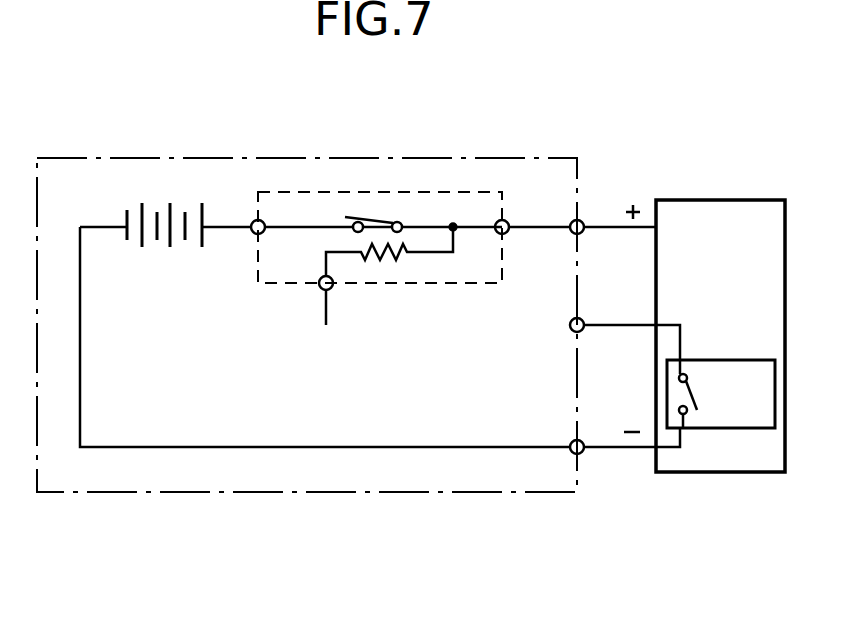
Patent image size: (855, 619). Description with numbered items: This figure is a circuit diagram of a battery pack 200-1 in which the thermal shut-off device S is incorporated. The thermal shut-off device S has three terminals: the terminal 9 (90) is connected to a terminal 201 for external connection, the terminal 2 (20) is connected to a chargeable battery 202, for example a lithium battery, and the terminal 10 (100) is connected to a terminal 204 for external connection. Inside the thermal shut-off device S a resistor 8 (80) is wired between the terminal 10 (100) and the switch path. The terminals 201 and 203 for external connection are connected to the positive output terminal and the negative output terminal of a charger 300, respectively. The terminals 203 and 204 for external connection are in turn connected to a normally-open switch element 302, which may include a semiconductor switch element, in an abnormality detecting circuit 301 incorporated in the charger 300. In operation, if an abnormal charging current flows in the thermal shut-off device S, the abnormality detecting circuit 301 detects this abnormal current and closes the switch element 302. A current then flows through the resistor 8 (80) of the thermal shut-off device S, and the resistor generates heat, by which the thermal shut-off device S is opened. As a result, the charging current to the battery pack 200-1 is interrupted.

The terminal 2 is at (215, 170).
The terminal 20 is at (258, 220).
The terminal 9 is at (584, 182).
The terminal 90 is at (508, 222).
The terminal 10 is at (347, 329).
The terminal 100 is at (318, 290).
The resistor 8 is at (419, 305).
The resistor 80 is at (387, 263).
The thermal shut-off device S is at (330, 196).
The battery pack 200-1 is at (137, 485).
The terminal for external connection 201 is at (579, 234).
The chargeable battery 202 is at (157, 251).
The terminal for external connection 203 is at (580, 455).
The terminal for external connection 204 is at (580, 333).
The charger 300 is at (680, 472).
The abnormality detecting circuit 301 is at (717, 422).
The normally-open switch element 302 is at (700, 388).